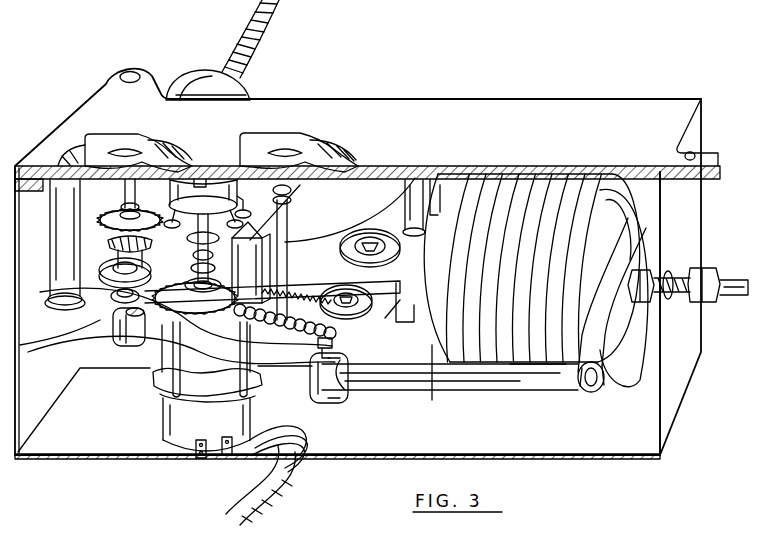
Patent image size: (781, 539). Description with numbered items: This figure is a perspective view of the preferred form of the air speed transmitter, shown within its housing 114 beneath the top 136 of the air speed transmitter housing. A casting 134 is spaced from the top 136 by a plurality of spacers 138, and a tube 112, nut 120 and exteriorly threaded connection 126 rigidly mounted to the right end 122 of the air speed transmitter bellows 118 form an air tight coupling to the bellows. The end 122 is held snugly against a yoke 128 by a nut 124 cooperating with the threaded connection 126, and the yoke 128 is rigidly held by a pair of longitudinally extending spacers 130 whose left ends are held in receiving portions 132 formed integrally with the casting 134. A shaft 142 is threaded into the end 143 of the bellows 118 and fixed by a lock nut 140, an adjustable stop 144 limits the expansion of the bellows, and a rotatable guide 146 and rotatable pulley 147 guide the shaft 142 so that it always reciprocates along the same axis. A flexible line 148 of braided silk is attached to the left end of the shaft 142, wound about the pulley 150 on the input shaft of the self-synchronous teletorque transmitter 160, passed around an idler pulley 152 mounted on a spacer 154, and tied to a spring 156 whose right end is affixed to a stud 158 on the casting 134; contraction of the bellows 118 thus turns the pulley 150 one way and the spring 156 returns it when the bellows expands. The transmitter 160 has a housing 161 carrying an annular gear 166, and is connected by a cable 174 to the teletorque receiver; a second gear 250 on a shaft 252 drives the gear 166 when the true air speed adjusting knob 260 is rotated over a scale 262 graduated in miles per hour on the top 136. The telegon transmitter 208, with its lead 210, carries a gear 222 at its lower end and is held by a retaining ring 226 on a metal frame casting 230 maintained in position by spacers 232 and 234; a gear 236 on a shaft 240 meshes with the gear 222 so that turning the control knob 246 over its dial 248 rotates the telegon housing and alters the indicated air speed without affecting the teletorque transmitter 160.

The tube 112 is at (736, 297).
The housing 114 is at (537, 96).
The air speed transmitter bellows 118 is at (565, 180).
The nut 120 is at (702, 271).
The end of bellows 122 is at (626, 232).
The nut 124 is at (650, 300).
The exteriorly threaded connection 126 is at (680, 273).
The yoke 128 is at (607, 362).
The longitudinally extending spacers 130 is at (515, 393).
The receiving portions 132 is at (335, 397).
The casting 134 is at (112, 312).
The top of air speed transmitter 136 is at (405, 117).
The spacers 138 is at (60, 267).
The lock nut 140 is at (410, 312).
The shaft 142 is at (378, 260).
The end of bellows 143 is at (428, 382).
The adjustable stop 144 is at (355, 316).
The rotatable guide 146 is at (318, 343).
The rotatable pulley 147 is at (352, 238).
The flexible line 148 is at (285, 278).
The pulley 150 is at (160, 347).
The idler pulley 152 is at (118, 282).
The spacer 154 is at (118, 300).
The spring 156 is at (262, 322).
The stud 158 is at (346, 374).
The teletorque transmitter 160 is at (157, 430).
The housing 161 is at (190, 438).
The annular gear 166 is at (198, 312).
The cable 174 is at (240, 501).
The telegon transmitter 208 is at (202, 175).
The cable 210 is at (258, 32).
The gear 222 is at (203, 231).
The retaining ring 226 is at (246, 212).
The metal frame casting 230 is at (292, 193).
The spacer 232 is at (125, 336).
The spacer 234 is at (262, 250).
The second gear 236 is at (102, 216).
The shaft 240 is at (125, 194).
The control knob 246 is at (120, 148).
The dial 248 is at (174, 146).
The second gear 250 is at (292, 287).
The shaft 252 is at (300, 222).
The true air speed adjusting knob 260 is at (276, 144).
The scale 262 is at (324, 146).